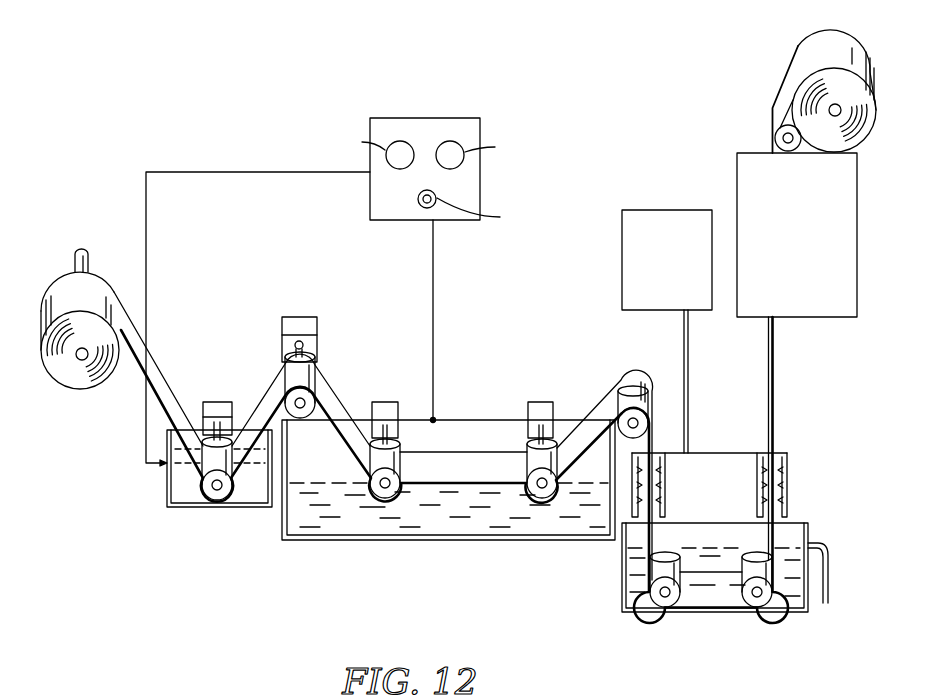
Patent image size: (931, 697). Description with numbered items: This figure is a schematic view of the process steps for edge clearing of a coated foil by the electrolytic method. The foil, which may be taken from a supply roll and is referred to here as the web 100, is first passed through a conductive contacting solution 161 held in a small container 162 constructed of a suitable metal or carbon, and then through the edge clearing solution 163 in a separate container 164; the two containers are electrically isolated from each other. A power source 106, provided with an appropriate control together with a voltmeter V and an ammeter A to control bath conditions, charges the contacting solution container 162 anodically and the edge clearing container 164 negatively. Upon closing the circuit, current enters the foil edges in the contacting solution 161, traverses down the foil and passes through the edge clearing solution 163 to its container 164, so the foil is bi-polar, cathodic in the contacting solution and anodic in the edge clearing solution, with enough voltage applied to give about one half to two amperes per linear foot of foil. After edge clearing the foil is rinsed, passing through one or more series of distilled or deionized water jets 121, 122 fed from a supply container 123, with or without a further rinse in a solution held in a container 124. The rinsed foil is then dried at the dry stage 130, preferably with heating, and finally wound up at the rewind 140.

The web 100 is at (137, 356).
The power source 106 is at (480, 177).
The jets 121 is at (667, 470).
The jets 122 is at (787, 483).
The supply container 123 is at (628, 270).
The container 124 is at (622, 588).
The dry 130 is at (737, 190).
The rewind 140 is at (835, 85).
The contacting solution 161 is at (182, 478).
The container 162 is at (182, 510).
The edge clearing solution 163 is at (293, 523).
The container 164 is at (388, 542).